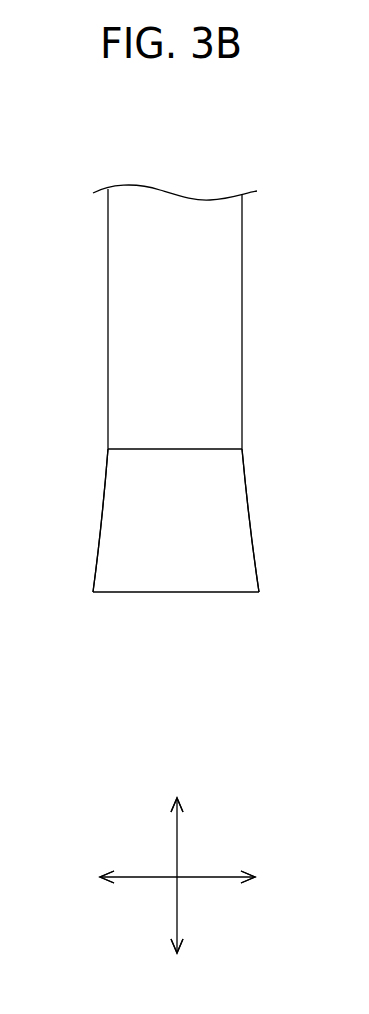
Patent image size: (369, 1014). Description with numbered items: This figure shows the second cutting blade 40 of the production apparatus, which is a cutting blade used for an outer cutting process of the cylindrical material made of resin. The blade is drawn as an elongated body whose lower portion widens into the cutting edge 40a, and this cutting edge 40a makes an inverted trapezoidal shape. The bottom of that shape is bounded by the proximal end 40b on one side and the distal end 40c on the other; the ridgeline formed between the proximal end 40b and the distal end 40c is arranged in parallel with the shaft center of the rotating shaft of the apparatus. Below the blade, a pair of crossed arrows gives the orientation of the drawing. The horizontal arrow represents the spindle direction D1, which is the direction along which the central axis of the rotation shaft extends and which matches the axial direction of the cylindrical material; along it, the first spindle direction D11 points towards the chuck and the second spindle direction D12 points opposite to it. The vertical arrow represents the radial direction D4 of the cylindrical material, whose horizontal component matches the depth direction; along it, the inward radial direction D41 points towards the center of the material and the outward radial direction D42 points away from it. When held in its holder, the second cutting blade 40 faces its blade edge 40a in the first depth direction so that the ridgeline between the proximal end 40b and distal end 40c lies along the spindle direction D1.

The second cutting blade 40 is at (122, 327).
The cutting edge 40a is at (178, 592).
The proximal end 40b is at (93, 592).
The distal end 40c is at (259, 592).
The spindle direction D1 is at (213, 877).
The radial direction D4 is at (180, 832).
The first spindle direction D11 is at (84, 878).
The second spindle direction D12 is at (270, 878).
The inward radial direction D41 is at (179, 960).
The outward radial direction D42 is at (179, 792).